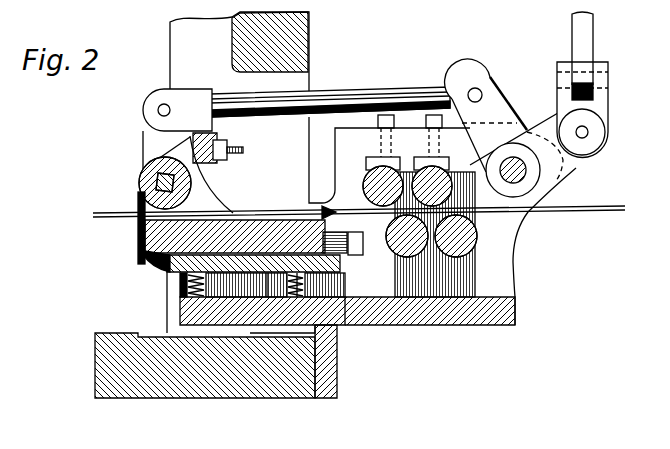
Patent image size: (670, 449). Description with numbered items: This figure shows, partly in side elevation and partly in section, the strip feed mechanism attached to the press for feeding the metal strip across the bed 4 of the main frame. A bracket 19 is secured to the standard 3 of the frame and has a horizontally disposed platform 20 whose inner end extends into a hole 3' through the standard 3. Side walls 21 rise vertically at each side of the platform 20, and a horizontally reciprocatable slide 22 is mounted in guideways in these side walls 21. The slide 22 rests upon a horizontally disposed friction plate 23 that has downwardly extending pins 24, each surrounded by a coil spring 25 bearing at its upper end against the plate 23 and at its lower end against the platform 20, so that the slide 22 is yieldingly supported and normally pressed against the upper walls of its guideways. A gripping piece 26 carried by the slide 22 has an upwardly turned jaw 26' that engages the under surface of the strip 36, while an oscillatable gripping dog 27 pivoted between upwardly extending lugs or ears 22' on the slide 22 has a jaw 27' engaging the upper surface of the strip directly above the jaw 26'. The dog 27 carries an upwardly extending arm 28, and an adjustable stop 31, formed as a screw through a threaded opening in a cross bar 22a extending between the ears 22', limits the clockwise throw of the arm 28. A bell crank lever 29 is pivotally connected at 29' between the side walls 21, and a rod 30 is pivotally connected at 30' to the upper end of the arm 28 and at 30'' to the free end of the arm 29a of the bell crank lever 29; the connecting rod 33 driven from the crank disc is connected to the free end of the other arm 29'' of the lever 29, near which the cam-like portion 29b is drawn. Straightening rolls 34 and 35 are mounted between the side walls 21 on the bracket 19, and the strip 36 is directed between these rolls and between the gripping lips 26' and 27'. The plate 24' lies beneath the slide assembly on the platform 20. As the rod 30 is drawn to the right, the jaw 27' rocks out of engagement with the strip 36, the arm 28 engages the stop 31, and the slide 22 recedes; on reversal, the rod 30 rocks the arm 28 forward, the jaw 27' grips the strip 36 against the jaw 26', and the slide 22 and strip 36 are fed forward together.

The upright 3 is at (251, 52).
The hole 3' is at (316, 137).
The rod 30 is at (330, 93).
The pivotal connection 30' is at (151, 90).
The pivotal connection 30'' is at (489, 79).
The arm of bell crank lever 29a is at (496, 101).
The pivotal connection 29' is at (516, 133).
The arm of bell crank lever 29'' is at (608, 132).
The cam surface 29b is at (580, 163).
The bell crank lever 29 is at (537, 170).
The strip of metal 36 is at (619, 207).
The connecting rod 33 is at (588, 38).
The arm 28 is at (152, 133).
The cross bar 22a is at (219, 140).
The adjustable stop 31 is at (220, 170).
The gripping dog 27 is at (152, 180).
The jaw 27' is at (139, 186).
The lugs or ears 22' is at (206, 174).
The jaw 26' is at (118, 228).
The gripping piece 26 is at (214, 236).
The slide 22 is at (219, 291).
The pins 24 is at (168, 285).
The coil spring 25 is at (200, 297).
The bed 4 is at (96, 391).
The bracket 19 is at (328, 386).
The friction plate 23 is at (348, 265).
The plate 24' is at (281, 321).
The straightening rolls 34 is at (400, 258).
The straightening rolls 35 is at (365, 188).
The platform 20 is at (460, 320).
The side walls 21 is at (505, 247).